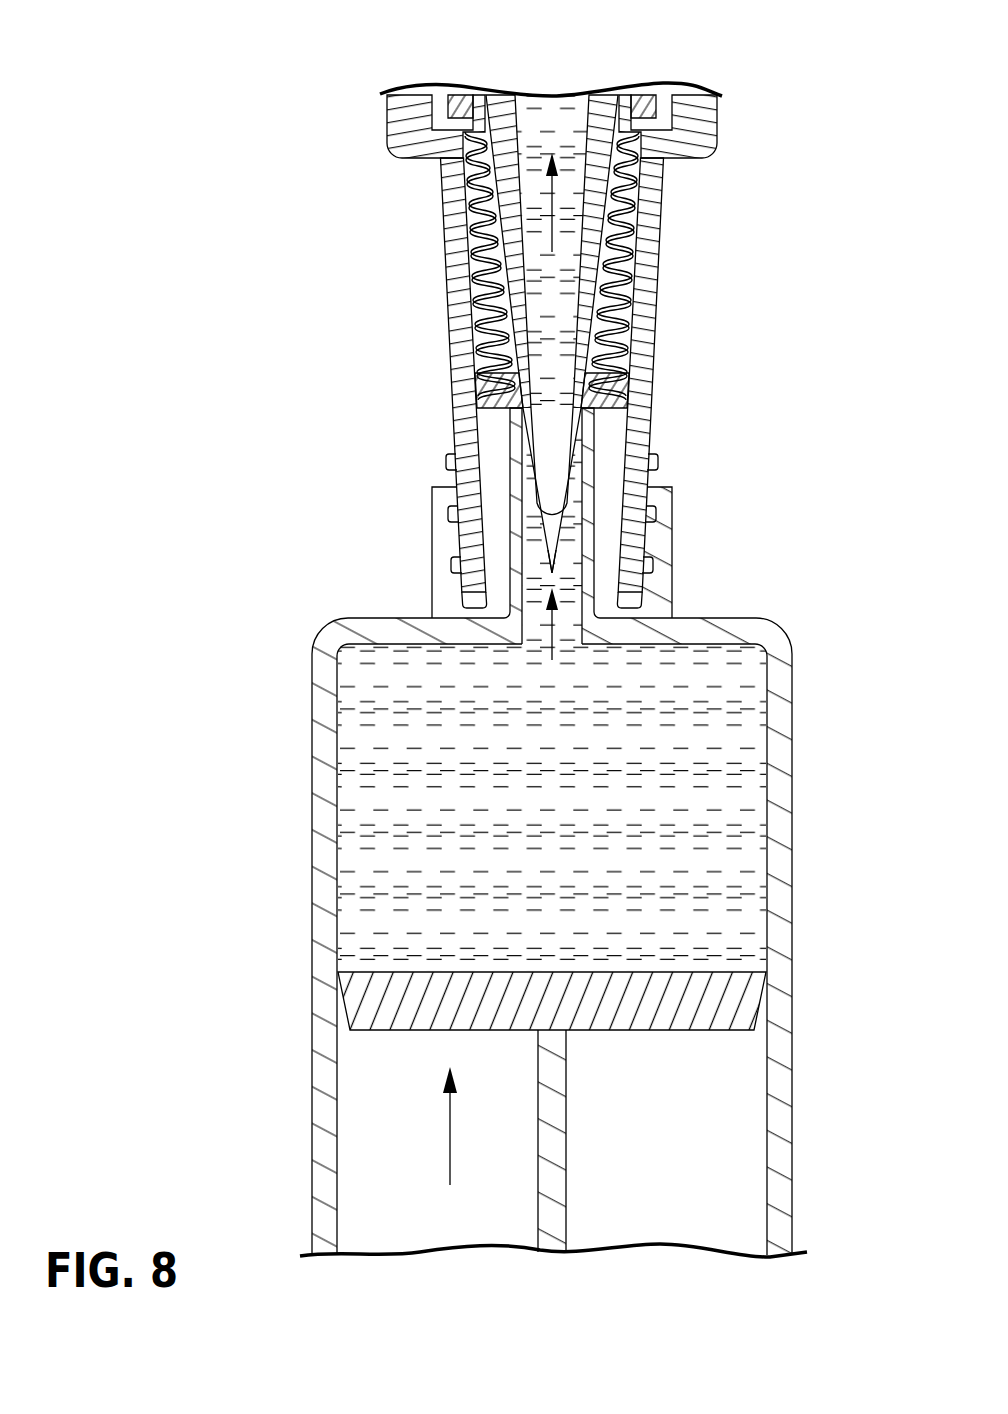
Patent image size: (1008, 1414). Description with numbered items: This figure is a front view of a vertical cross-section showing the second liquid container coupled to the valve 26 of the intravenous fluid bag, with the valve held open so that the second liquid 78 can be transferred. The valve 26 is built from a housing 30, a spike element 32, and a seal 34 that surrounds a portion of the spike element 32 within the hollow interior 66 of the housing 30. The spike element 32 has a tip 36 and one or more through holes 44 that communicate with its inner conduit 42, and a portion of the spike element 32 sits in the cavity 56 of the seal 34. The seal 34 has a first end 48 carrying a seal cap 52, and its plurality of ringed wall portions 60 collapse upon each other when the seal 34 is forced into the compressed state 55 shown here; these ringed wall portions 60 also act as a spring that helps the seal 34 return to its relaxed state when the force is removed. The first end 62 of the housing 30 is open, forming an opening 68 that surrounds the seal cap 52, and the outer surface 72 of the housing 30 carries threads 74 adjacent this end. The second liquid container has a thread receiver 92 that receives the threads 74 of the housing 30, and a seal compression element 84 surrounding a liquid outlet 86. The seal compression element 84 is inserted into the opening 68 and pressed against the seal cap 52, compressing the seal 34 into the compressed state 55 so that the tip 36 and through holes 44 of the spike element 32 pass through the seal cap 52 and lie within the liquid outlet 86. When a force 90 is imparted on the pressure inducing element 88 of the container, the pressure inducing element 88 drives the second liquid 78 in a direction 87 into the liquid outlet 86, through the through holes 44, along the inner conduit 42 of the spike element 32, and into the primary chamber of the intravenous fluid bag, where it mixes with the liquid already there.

The valve 26 is at (438, 300).
The housing 30 is at (724, 124).
The spike element 32 is at (657, 253).
The seal 34 is at (620, 371).
The tip 36 is at (650, 558).
The inner conduit 42 is at (520, 132).
The through holes 44 is at (578, 452).
The first end 48 is at (533, 437).
The seal cap 52 is at (478, 374).
The compressed state 55 is at (609, 419).
The cavity 56 is at (485, 229).
The ringed wall portions 60 is at (633, 215).
The first end 62 is at (465, 628).
The hollow interior 66 is at (451, 540).
The opening 68 is at (609, 605).
The outer surface 72 is at (450, 455).
The threads 74 is at (455, 565).
The second liquid 78 is at (670, 823).
The seal compression element 84 is at (592, 494).
The liquid outlet 86 is at (523, 466).
The direction 87 is at (560, 175).
The pressure inducing element 88 is at (548, 627).
The force 90 is at (448, 1128).
The thread receiver 92 is at (452, 505).